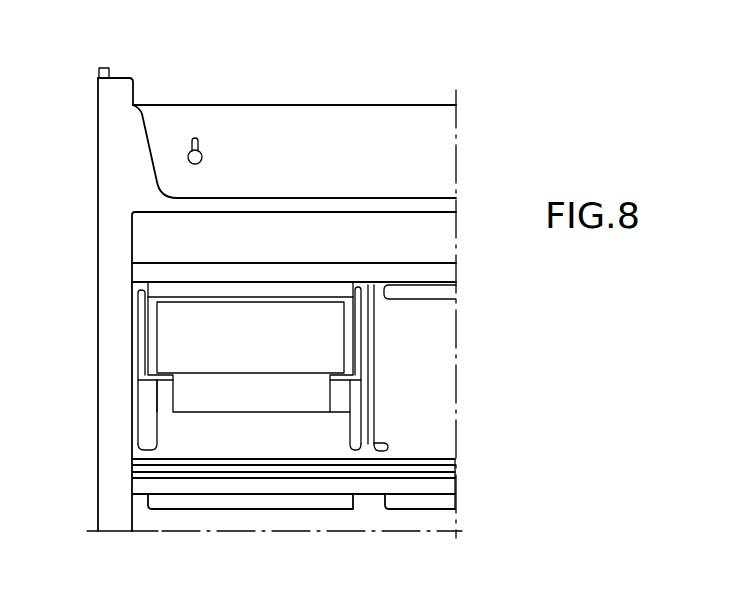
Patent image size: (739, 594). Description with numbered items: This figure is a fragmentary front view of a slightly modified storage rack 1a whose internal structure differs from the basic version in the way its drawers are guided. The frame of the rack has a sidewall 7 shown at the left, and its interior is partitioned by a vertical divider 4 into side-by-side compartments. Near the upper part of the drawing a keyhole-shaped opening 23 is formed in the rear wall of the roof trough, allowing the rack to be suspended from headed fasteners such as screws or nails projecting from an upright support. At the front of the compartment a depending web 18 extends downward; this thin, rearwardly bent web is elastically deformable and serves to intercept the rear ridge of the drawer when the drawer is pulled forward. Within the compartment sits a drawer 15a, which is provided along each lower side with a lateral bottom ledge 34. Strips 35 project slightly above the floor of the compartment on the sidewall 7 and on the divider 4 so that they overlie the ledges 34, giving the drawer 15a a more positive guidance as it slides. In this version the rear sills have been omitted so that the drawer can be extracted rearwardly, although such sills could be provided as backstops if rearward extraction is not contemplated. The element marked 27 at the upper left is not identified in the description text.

The modified rack 1a is at (168, 97).
The vertical divider 4 is at (376, 350).
The sidewall 7 is at (113, 263).
The drawer 15a is at (178, 342).
The depending web 18 is at (195, 288).
The keyhole-shaped opening 23 is at (199, 139).
The edge stop 27 is at (106, 67).
The lateral bottom ledge 34 is at (147, 452).
The strip 35 is at (146, 445).